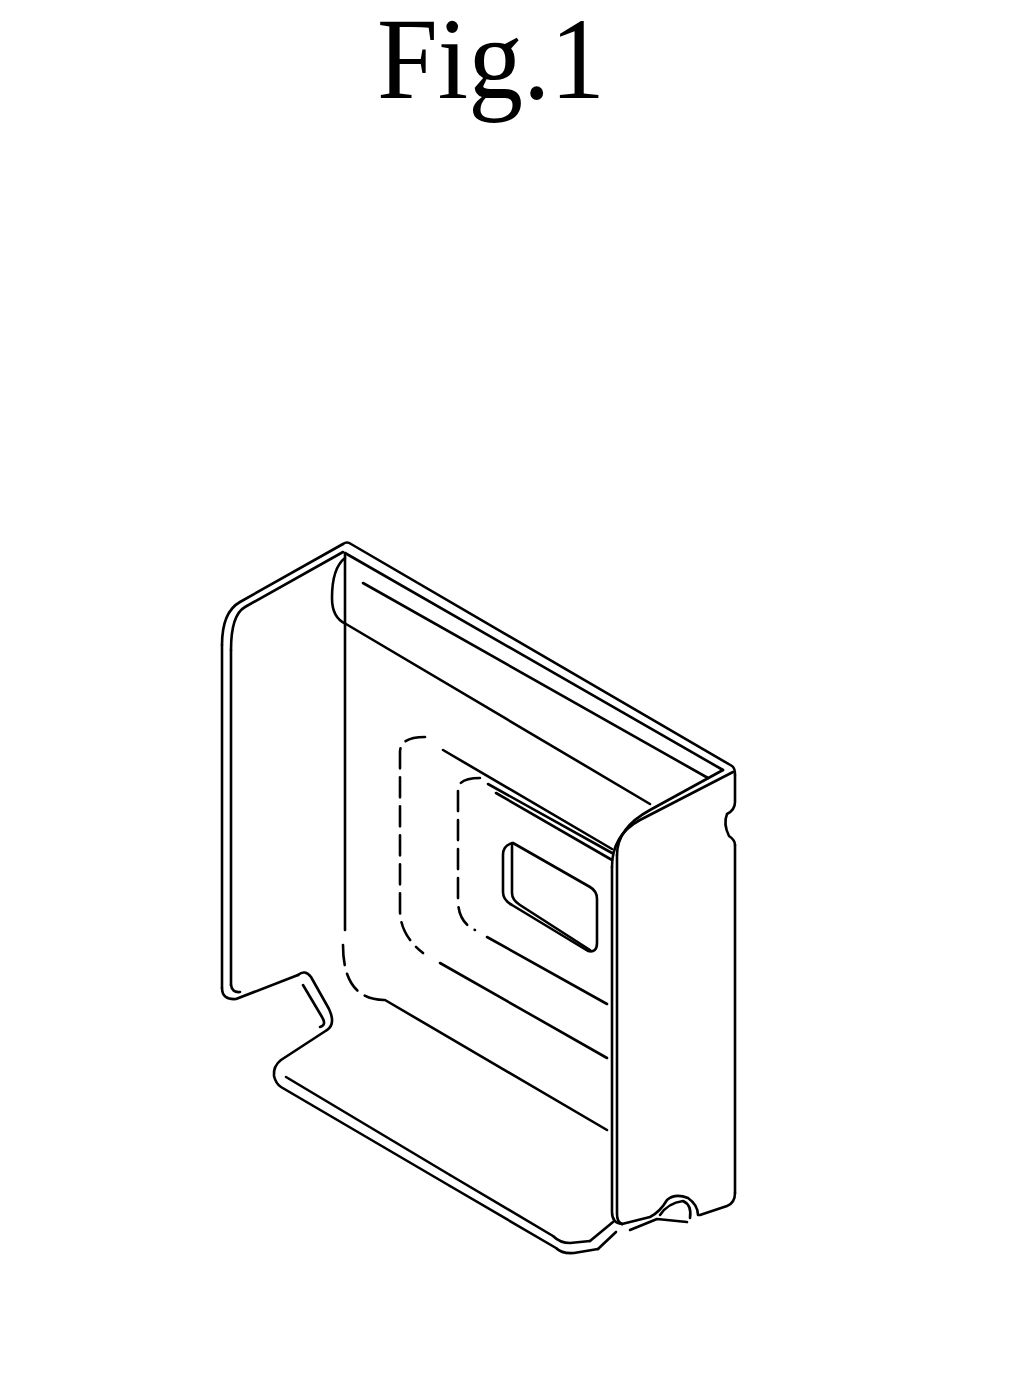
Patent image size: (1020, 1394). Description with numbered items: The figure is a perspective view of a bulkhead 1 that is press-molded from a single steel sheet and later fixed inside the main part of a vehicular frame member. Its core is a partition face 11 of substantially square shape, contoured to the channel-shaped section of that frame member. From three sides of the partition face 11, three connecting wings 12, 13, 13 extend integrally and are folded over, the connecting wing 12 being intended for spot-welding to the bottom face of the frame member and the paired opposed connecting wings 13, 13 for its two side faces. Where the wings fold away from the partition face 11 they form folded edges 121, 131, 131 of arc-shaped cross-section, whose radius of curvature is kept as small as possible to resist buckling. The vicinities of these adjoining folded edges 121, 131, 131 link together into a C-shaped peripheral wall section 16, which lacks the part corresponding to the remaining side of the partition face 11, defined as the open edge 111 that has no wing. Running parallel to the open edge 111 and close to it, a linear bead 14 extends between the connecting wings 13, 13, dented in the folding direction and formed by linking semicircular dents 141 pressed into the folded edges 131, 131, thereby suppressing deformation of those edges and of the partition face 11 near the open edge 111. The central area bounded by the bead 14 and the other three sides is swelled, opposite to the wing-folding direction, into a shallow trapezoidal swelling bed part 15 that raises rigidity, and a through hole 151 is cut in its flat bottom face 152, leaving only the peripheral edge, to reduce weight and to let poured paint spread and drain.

The bulkhead 1 is at (690, 1186).
The partition face 11 is at (370, 813).
The open edge 111 is at (455, 603).
The connecting wing 12 is at (450, 1088).
The folded edge 121 is at (450, 1040).
The connecting wing 13 is at (275, 758).
The folded edge 131 is at (340, 858).
The bead 14 is at (478, 677).
The dent 141 is at (732, 822).
The swelling bed part 15 is at (430, 773).
The through hole 151 is at (487, 820).
The flat bottom face 152 is at (550, 862).
The peripheral wall section 16 is at (332, 985).